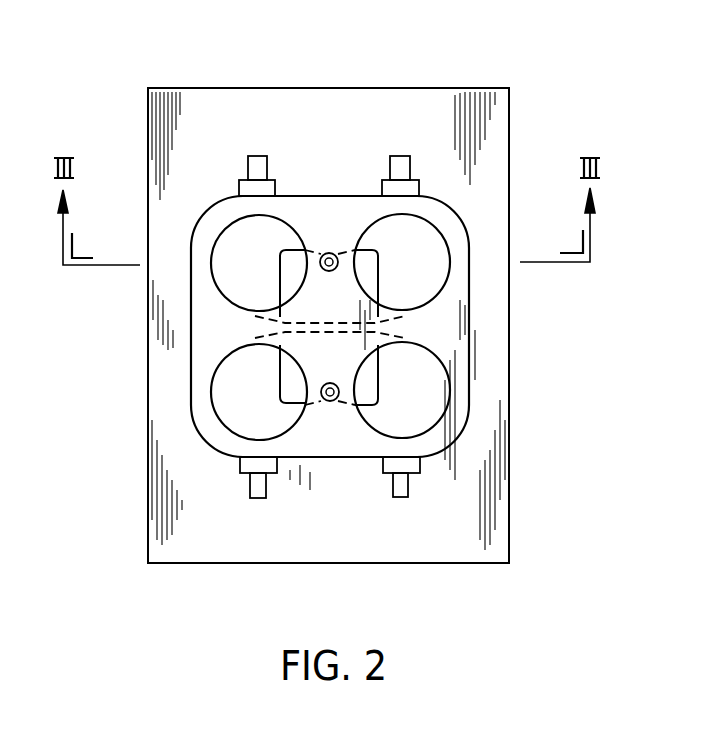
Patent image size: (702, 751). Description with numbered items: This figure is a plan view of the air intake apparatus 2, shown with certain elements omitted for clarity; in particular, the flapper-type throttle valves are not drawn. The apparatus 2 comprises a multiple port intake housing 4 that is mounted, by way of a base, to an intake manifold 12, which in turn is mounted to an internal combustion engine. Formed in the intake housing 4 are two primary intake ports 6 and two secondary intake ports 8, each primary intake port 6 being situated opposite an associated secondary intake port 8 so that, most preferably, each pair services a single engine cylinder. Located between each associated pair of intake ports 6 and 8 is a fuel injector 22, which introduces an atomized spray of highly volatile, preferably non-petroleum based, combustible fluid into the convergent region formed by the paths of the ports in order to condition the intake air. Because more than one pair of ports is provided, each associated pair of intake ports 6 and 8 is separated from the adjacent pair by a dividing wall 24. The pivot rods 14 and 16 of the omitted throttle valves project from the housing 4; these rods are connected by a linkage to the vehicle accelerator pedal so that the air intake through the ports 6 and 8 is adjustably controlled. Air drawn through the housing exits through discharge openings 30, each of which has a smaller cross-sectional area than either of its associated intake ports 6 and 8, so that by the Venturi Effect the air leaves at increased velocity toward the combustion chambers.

The apparatus 2 is at (242, 76).
The intake manifold 12 is at (488, 125).
The multiple port intake housing 4 is at (469, 341).
The primary intake ports 6 is at (267, 280).
The secondary intake ports 8 is at (410, 280).
The pivot rod 14 is at (250, 487).
The pivot rod 16 is at (408, 484).
The fuel injector 22 is at (329, 252).
The dividing wall 24 is at (314, 323).
The discharge openings 30 is at (362, 249).